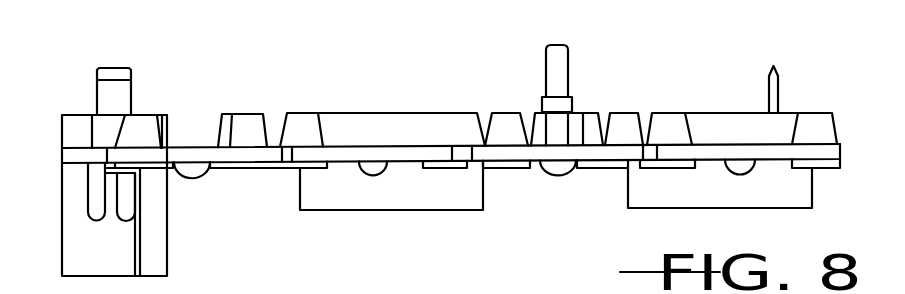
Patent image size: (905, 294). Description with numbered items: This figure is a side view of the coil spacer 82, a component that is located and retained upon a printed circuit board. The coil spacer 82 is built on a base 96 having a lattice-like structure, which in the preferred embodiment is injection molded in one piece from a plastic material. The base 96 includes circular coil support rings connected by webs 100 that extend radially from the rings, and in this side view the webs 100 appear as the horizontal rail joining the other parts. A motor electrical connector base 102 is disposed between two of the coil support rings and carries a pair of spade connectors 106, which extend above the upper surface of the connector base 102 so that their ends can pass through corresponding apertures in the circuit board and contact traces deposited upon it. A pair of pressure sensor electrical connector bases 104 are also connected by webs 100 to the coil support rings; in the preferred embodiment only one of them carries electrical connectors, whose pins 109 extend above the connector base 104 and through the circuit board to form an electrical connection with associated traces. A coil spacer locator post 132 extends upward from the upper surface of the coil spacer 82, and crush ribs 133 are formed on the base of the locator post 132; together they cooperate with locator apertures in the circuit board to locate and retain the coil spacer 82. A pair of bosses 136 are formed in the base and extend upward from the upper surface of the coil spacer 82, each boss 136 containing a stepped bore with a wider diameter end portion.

The coil spacer 82 is at (726, 58).
The base 96 is at (357, 96).
The webs 100 is at (247, 153).
The motor electrical connector base 102 is at (62, 127).
The pressure sensor electrical connector base 104 is at (482, 197).
The spade connectors 106 is at (125, 96).
The pins 109 is at (778, 90).
The coil spacer locator posts 132 is at (553, 70).
The crush ribs 133 is at (568, 105).
The bosses 136 is at (228, 122).